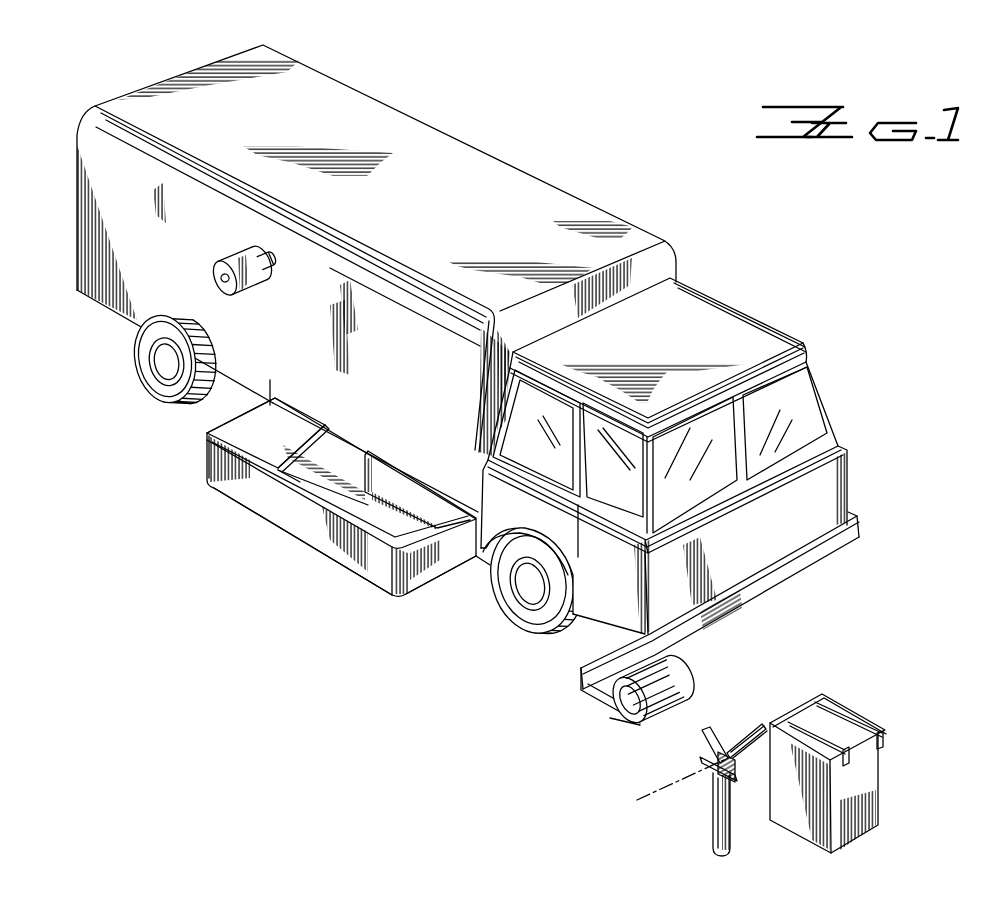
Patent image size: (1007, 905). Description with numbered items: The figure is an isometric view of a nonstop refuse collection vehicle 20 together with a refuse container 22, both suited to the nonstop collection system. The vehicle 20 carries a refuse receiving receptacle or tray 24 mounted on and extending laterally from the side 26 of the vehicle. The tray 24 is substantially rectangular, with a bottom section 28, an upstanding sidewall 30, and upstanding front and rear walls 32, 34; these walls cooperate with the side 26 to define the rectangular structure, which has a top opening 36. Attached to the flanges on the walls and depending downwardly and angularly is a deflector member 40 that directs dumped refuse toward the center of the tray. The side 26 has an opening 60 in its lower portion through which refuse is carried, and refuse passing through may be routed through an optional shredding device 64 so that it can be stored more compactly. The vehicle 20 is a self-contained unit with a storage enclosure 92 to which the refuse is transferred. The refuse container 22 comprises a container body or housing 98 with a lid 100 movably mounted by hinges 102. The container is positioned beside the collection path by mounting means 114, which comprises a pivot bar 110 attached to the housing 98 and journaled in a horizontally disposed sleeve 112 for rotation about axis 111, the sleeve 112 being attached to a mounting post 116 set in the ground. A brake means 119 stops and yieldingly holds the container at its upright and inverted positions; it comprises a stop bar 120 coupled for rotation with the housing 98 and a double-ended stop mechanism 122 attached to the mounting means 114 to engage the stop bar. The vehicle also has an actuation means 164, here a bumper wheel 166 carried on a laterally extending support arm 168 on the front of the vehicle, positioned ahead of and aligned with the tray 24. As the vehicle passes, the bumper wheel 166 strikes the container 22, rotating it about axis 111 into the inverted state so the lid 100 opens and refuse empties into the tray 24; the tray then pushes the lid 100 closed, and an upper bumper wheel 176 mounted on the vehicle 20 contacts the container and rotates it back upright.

The nonstop refuse collection vehicle 20 is at (745, 308).
The refuse container 22 is at (854, 762).
The refuse receiving receptacle or tray 24 is at (451, 576).
The side of the refuse collection vehicle 26 is at (262, 372).
The bottom section 28 is at (323, 511).
The upstanding sidewall 30 is at (307, 533).
The upstanding front wall 32 is at (423, 588).
The upstanding rear wall 34 is at (210, 458).
The top opening 36 is at (333, 493).
The deflector member 40 is at (244, 444).
The opening 60 is at (348, 458).
The shredding device 64 is at (324, 437).
The storage enclosure 92 is at (504, 160).
The container body or housing 98 is at (852, 832).
The lid 100 is at (831, 700).
The hinges 102 is at (848, 754).
The pivot bar 110 is at (797, 714).
The axis 111 is at (677, 776).
The sleeve 112 is at (746, 734).
The mounting means 114 is at (708, 833).
The mounting post 116 is at (728, 817).
The brake means 119 is at (748, 770).
The stop bar 120 is at (701, 737).
The double-ended stop mechanism 122 is at (709, 778).
The actuation means 164 is at (700, 672).
The bumper wheel 166 is at (624, 722).
The laterally extending support arm 168 is at (578, 686).
The upper bumper wheel 176 is at (224, 262).